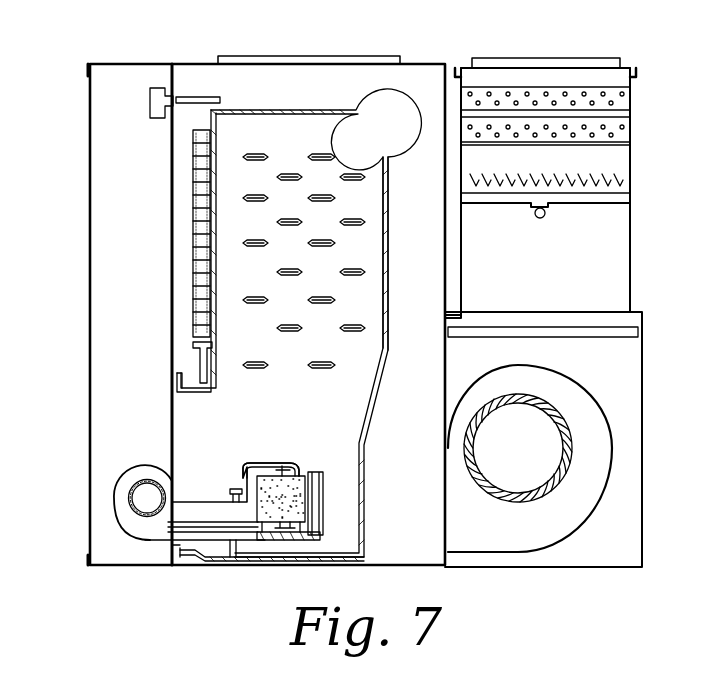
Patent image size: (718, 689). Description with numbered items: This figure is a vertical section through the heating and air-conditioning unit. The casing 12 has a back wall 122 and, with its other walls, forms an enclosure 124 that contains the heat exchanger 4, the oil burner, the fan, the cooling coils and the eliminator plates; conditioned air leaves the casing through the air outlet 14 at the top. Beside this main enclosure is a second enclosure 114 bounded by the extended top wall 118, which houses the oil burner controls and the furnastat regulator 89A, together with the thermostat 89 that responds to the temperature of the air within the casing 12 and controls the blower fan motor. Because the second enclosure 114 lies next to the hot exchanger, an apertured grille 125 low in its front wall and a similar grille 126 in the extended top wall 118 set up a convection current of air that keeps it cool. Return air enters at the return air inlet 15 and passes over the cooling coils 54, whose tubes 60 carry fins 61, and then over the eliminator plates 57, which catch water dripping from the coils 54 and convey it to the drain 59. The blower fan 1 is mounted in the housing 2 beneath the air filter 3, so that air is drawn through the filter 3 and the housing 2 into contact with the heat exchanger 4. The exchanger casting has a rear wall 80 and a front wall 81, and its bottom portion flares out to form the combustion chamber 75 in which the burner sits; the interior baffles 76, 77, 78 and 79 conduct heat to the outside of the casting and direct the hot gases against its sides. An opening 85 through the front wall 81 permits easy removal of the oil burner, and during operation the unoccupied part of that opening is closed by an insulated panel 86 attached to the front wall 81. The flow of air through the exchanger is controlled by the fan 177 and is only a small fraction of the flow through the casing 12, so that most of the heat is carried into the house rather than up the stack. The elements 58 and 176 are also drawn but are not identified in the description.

The blower fan 1 is at (548, 495).
The housing 2 is at (585, 523).
The air filter 3 is at (624, 333).
The heat exchanger 4 is at (355, 435).
The casing 12 is at (90, 177).
The air outlet 14 is at (295, 55).
The return air inlet 15 is at (552, 57).
The cooling coils 54 is at (623, 130).
The eliminator plates 57 is at (620, 180).
The support plate 58 is at (603, 205).
The drain 59 is at (548, 213).
The tubes 60 is at (596, 137).
The fins 61 is at (593, 145).
The combustion chamber 75 is at (230, 440).
The interior baffle 76 is at (315, 360).
The interior baffle 77 is at (318, 303).
The interior baffle 78 is at (318, 248).
The interior baffle 79 is at (322, 201).
The rear wall 80 is at (385, 297).
The front wall 81 is at (195, 258).
The opening 85 is at (178, 382).
The insulated panel 86 is at (172, 424).
The thermostat 89 is at (190, 97).
The furnastat regulator 89A is at (155, 98).
The second enclosure 114 is at (110, 123).
The extended top wall 118 is at (133, 72).
The back wall 122 is at (630, 285).
The enclosure 124 is at (405, 540).
The apertured grille 125 is at (92, 512).
The grille 126 is at (133, 66).
The gas supply pipe 176 is at (208, 512).
The fan 177 is at (128, 497).